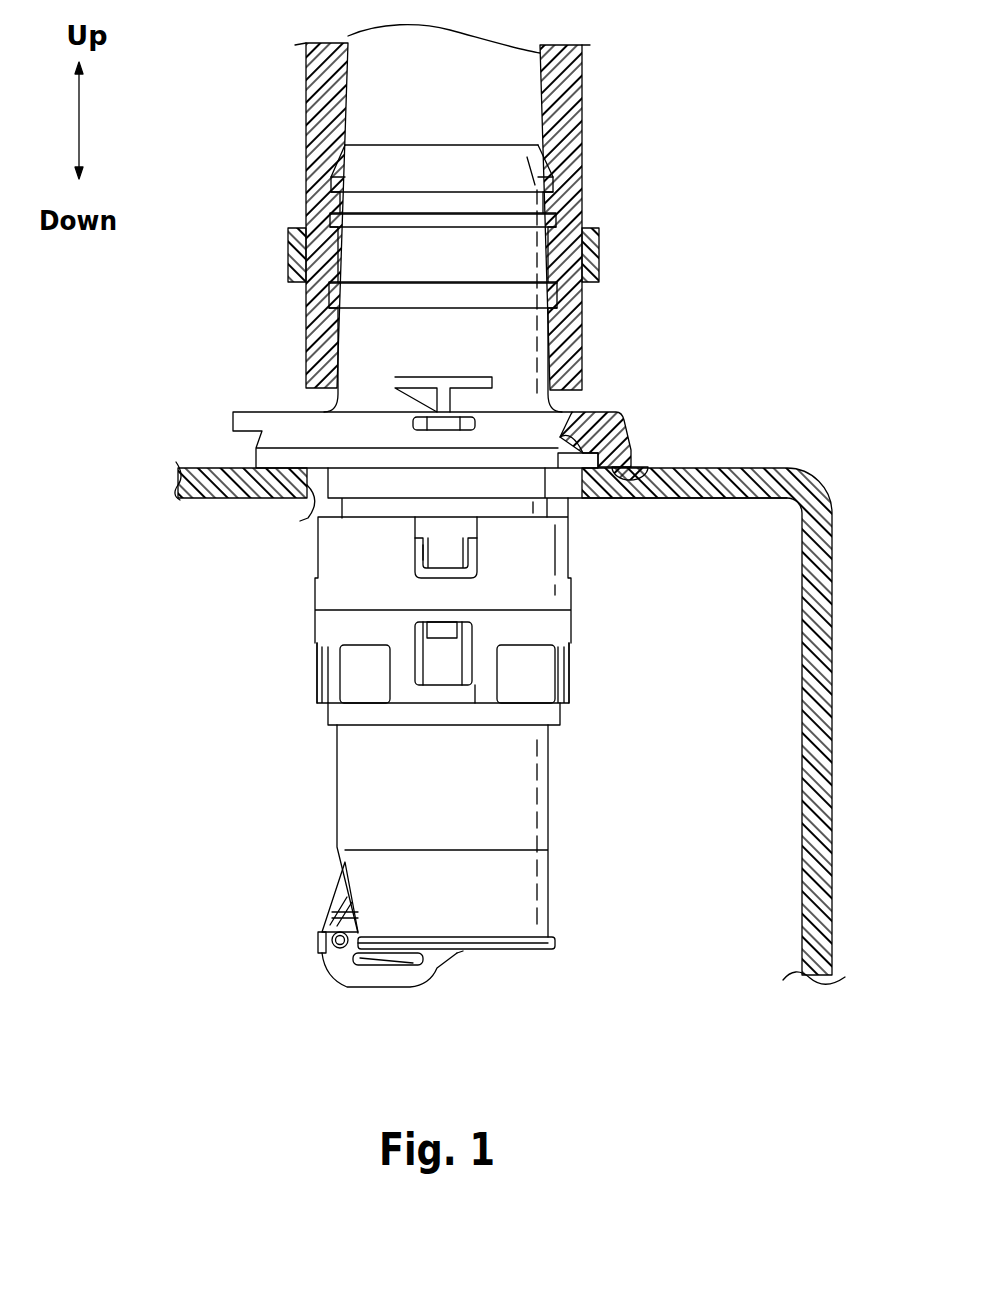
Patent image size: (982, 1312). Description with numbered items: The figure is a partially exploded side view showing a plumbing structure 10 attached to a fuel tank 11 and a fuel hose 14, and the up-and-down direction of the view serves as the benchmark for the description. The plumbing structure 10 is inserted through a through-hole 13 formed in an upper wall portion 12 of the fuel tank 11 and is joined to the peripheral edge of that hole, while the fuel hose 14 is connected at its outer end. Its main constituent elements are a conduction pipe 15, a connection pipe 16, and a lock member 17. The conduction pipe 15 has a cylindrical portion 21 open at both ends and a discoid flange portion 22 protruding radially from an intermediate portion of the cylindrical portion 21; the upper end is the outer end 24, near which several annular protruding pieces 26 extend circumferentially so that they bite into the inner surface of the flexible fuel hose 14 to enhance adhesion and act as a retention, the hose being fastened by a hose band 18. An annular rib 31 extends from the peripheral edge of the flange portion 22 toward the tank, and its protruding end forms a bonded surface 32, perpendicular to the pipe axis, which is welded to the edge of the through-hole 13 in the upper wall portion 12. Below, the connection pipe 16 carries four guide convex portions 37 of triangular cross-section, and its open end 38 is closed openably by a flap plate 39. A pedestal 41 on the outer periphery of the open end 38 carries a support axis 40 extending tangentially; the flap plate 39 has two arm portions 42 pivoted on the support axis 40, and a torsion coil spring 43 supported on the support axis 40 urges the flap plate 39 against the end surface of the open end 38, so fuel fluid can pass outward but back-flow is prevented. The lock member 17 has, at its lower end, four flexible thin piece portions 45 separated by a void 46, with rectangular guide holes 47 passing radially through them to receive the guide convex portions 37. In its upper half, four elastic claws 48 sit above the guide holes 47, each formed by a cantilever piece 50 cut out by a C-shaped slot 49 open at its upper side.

The plumbing structure 10 is at (197, 344).
The fuel tank 11 is at (761, 465).
The upper wall portion 12 is at (203, 470).
The through-hole 13 is at (300, 518).
The fuel hose 14 is at (578, 112).
The conduction pipe 15 is at (282, 407).
The connection pipe 16 is at (557, 808).
The lock member 17 is at (574, 597).
The hose band 18 is at (599, 253).
The cylindrical portion 21 is at (457, 138).
The flange portion 22 is at (600, 404).
The outer end 24 is at (399, 147).
The annular protruding pieces 26 is at (312, 202).
The annular rib 31 is at (630, 452).
The bonded surface 32 is at (645, 467).
The guide convex portions 37 is at (457, 629).
The open end 38 is at (540, 920).
The flap plate 39 is at (503, 953).
The support axis 40 is at (342, 952).
The pedestal 41 is at (333, 903).
The arm portions 42 is at (420, 977).
The torsion coil spring 43 is at (373, 960).
The thin piece portions 45 is at (318, 697).
The void 46 is at (381, 687).
The guide holes 47 is at (420, 663).
The elastic claws 48 is at (484, 552).
The slot 49 is at (415, 557).
The cantilever piece 50 is at (433, 545).